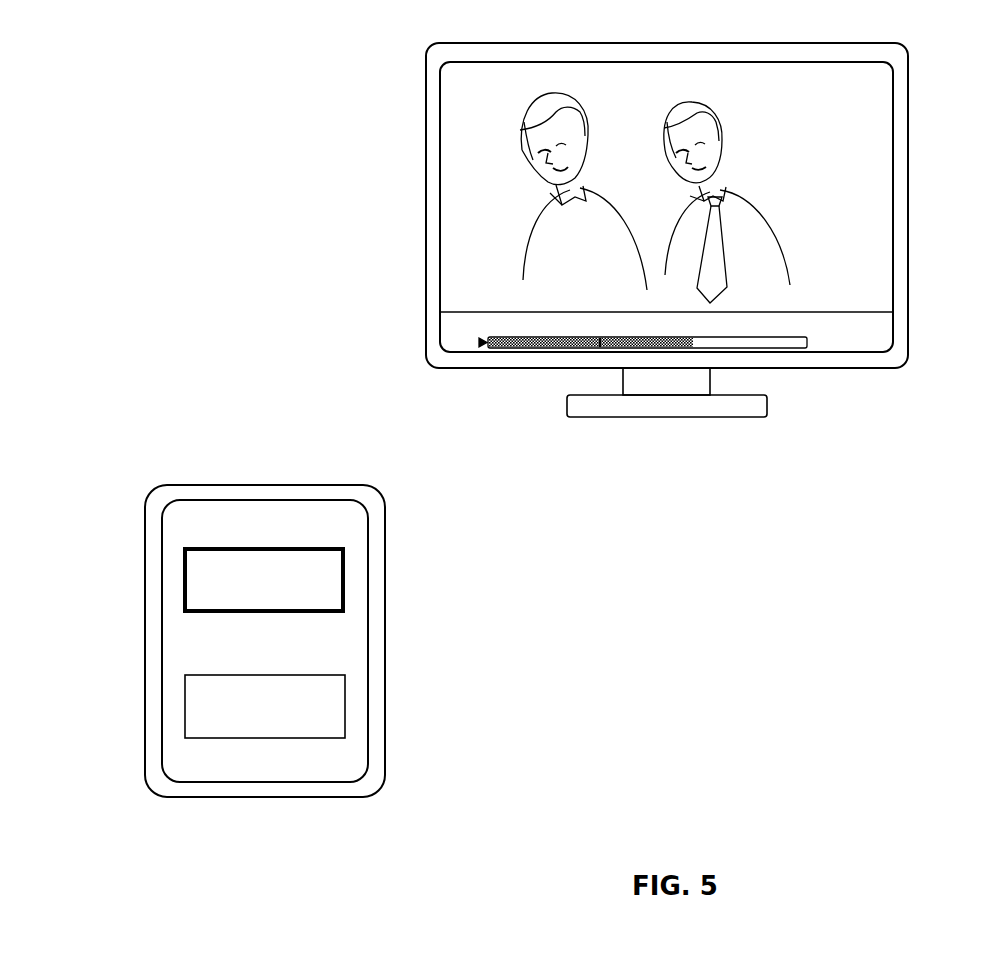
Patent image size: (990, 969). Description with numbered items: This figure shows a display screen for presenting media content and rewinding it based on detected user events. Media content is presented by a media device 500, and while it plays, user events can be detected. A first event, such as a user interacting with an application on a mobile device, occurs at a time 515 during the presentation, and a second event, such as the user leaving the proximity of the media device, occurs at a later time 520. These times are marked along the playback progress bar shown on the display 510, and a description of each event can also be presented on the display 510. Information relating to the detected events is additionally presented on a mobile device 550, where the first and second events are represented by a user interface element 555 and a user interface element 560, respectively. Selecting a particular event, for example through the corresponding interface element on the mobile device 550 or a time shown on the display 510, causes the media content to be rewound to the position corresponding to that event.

The media device 500 is at (922, 113).
The display 510 is at (826, 203).
The time of first event 515 is at (541, 350).
The time of second event 520 is at (599, 350).
The mobile device 550 is at (396, 501).
The user interface element 555 is at (275, 600).
The user interface element 560 is at (268, 733).